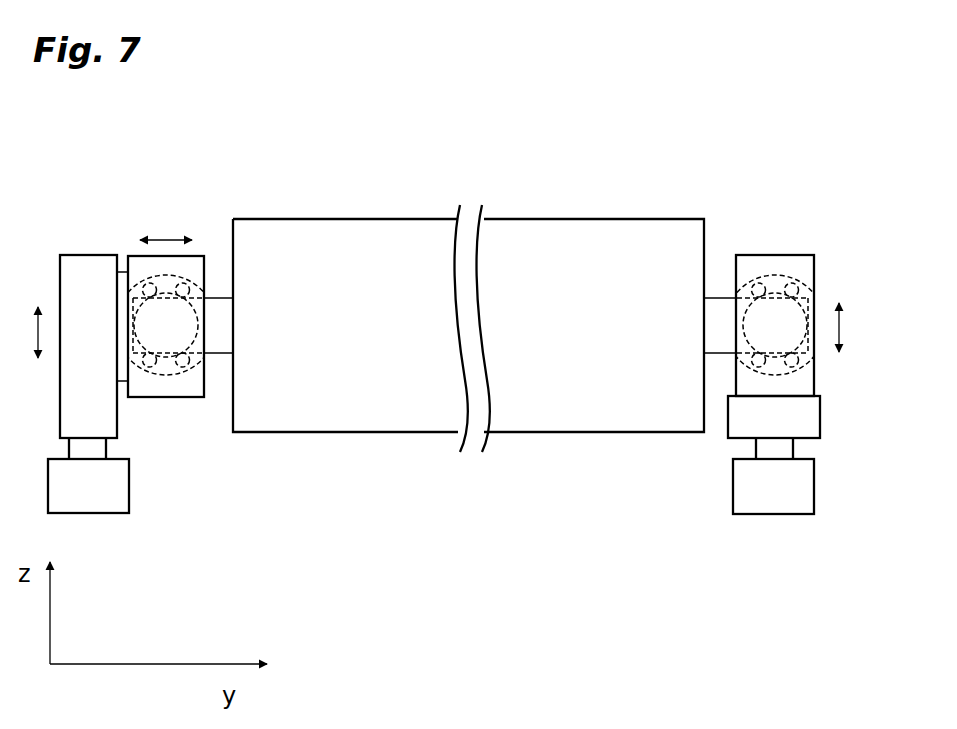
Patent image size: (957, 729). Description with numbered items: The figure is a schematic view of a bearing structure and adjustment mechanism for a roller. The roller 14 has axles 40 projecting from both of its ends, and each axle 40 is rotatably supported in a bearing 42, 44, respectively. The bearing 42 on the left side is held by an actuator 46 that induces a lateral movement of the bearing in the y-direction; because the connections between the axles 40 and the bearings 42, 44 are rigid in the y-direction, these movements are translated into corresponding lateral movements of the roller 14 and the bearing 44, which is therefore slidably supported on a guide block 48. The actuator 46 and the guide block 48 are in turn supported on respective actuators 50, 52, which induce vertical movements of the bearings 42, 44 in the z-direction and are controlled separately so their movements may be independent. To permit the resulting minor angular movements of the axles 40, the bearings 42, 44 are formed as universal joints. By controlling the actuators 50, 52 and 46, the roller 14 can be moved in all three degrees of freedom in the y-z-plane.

The roller 14 is at (378, 232).
The axles 40 is at (215, 340).
The bearing 42 is at (163, 387).
The bearing 44 is at (766, 262).
The actuator 46 is at (80, 275).
The guide block 48 is at (777, 427).
The actuator 50 is at (101, 490).
The actuator 52 is at (783, 490).